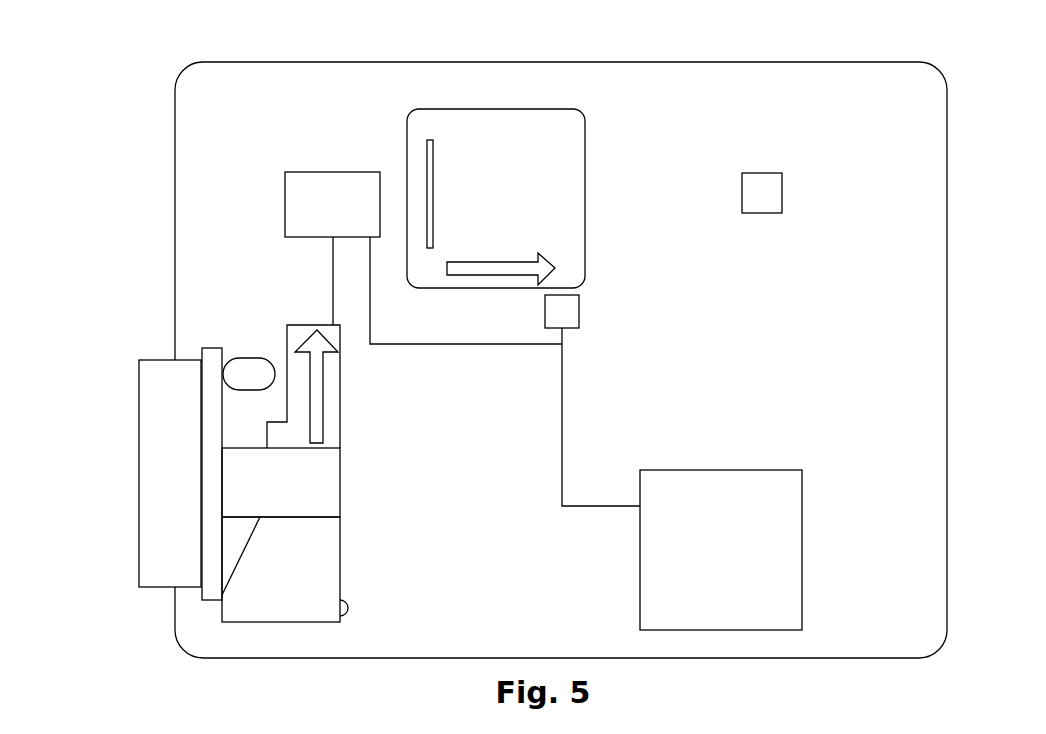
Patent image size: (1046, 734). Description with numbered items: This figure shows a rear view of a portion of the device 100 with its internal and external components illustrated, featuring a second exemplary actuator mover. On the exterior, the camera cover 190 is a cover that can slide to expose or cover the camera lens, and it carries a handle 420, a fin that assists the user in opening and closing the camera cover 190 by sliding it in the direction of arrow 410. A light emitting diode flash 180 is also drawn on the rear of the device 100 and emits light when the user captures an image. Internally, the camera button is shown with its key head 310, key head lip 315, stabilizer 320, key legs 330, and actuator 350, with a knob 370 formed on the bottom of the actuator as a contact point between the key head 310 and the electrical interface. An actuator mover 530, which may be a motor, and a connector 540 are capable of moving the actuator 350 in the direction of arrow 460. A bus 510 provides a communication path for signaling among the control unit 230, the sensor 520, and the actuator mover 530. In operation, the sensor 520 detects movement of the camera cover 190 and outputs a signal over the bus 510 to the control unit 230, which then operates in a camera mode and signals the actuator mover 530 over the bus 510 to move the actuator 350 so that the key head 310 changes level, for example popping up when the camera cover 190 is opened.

The device 100 is at (163, 69).
The camera cover 190 is at (495, 109).
The handle 420 is at (433, 192).
The arrow 410 is at (538, 248).
The actuator mover 530 is at (333, 172).
The connector 540 is at (333, 295).
The bus 510 is at (562, 364).
The sensor 520 is at (579, 307).
The light emitting diode (LED) flash 180 is at (782, 192).
The control unit 230 is at (721, 550).
The key head 310 is at (139, 423).
The key head lip 315 is at (207, 348).
The stabilizer 320 is at (244, 357).
The actuator 350 is at (340, 370).
The arrow 460 is at (323, 405).
The key legs 330 is at (330, 473).
The knob 370 is at (352, 609).